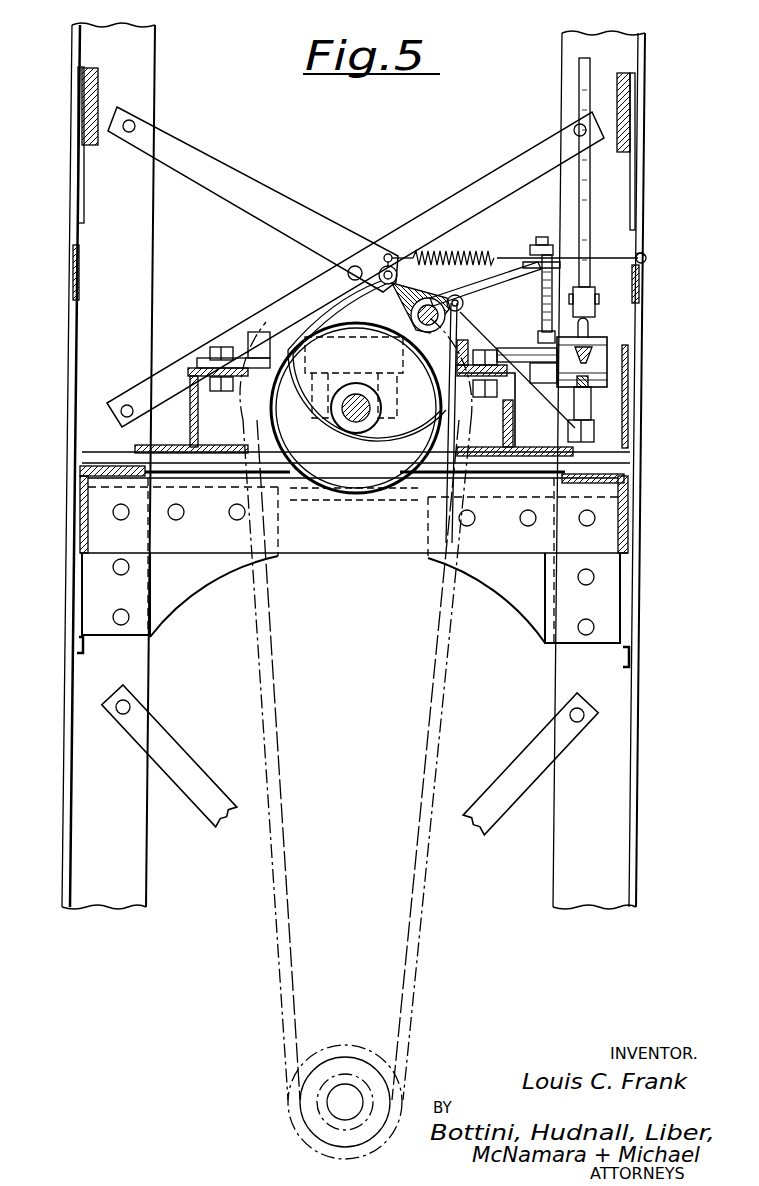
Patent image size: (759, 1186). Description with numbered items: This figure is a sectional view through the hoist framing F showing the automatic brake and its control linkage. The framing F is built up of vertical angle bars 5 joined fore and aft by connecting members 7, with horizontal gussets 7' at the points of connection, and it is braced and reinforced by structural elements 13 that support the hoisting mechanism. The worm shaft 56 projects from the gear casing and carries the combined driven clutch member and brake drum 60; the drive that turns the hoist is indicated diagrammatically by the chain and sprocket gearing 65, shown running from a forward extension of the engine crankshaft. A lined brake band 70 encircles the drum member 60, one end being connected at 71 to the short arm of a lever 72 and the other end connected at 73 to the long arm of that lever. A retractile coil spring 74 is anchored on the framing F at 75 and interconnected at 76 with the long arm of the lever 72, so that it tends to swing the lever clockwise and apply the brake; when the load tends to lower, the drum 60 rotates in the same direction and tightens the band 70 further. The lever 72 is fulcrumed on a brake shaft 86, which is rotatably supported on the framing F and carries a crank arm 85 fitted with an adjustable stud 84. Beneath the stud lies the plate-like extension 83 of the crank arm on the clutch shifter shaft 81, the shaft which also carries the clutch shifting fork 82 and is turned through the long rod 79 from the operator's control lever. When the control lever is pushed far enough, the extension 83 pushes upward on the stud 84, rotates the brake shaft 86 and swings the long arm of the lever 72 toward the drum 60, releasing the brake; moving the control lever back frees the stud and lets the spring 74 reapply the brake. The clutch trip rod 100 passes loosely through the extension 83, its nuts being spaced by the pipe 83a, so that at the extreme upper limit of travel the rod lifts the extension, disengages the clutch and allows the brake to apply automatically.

The framing F is at (641, 202).
The clutch trip rod 100 is at (581, 74).
The brake band end connection 73 is at (384, 252).
The spring interconnection 76 is at (393, 259).
The lever 72 is at (431, 294).
The brake shaft 86 is at (430, 327).
The stud 84 is at (540, 312).
The brake band end connection 71 is at (478, 256).
The spring anchor 75 is at (642, 251).
The crank arm 85 is at (548, 263).
The retractile coil spring 74 is at (504, 250).
The long rod 79 is at (594, 334).
The plate-like extension 83 is at (608, 378).
The pipe 83a is at (593, 402).
The clutch shifter shaft 81 is at (520, 325).
The combined driven clutch member and brake drum 60 is at (332, 487).
The worm shaft 56 is at (346, 415).
The clutch shifting fork 82 is at (380, 352).
The brake band 70 is at (283, 337).
The chain and sprocket gearing 65 is at (290, 976).
The structural elements 13 is at (98, 453).
The connecting members 7 is at (350, 554).
The horizontal gussets 7' is at (384, 524).
The vertical angle bars 5 is at (93, 687).